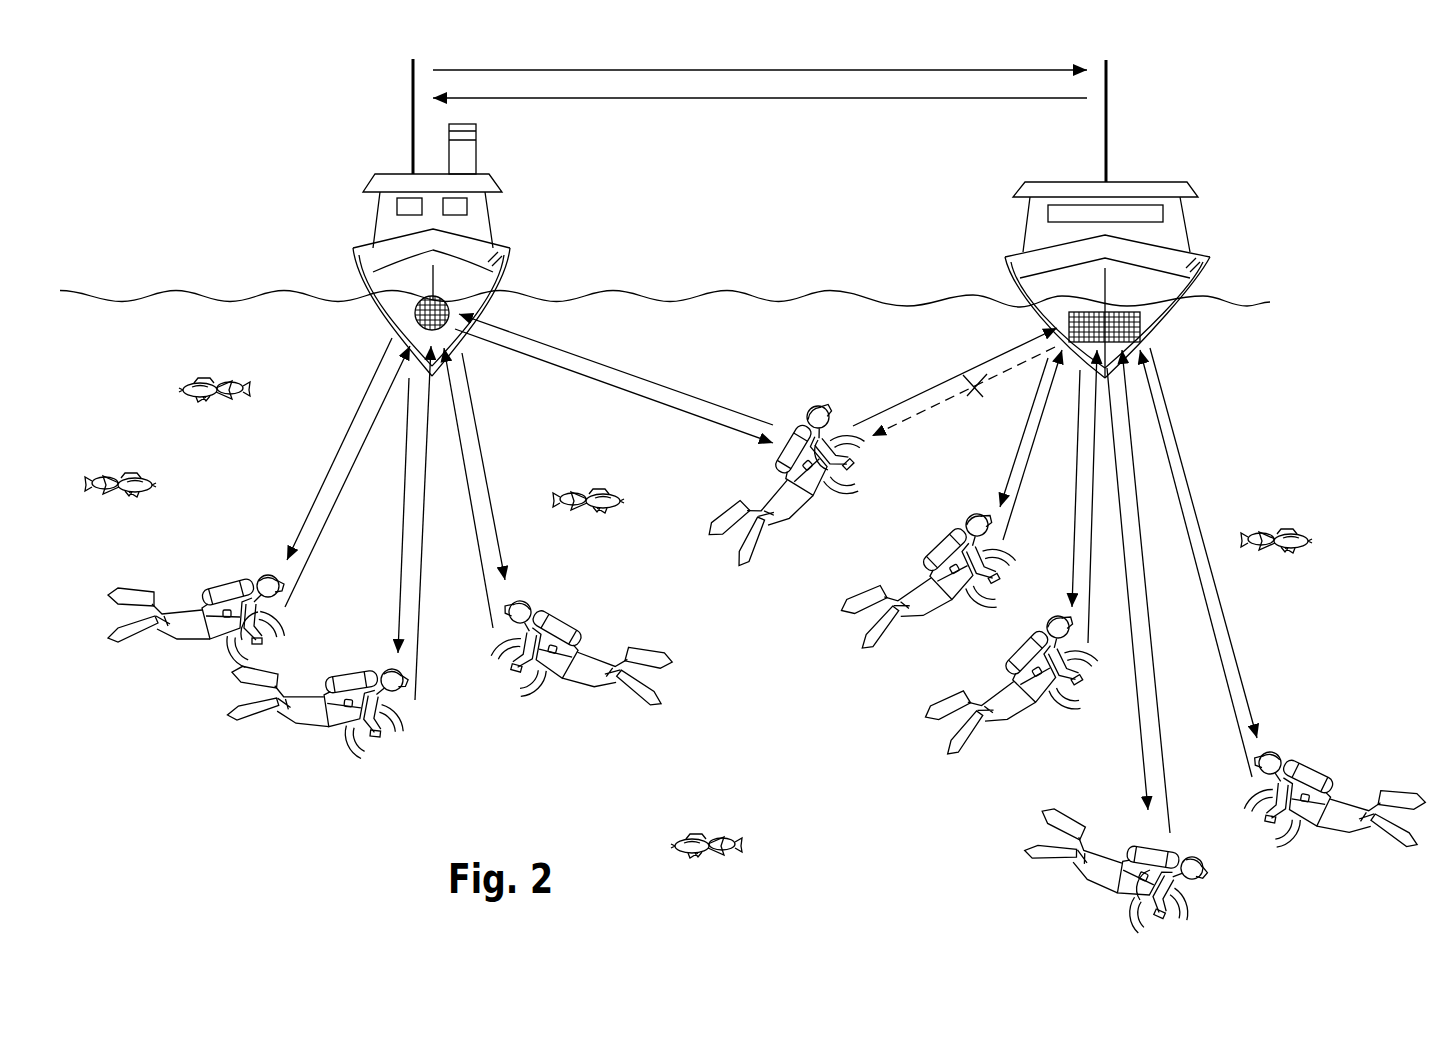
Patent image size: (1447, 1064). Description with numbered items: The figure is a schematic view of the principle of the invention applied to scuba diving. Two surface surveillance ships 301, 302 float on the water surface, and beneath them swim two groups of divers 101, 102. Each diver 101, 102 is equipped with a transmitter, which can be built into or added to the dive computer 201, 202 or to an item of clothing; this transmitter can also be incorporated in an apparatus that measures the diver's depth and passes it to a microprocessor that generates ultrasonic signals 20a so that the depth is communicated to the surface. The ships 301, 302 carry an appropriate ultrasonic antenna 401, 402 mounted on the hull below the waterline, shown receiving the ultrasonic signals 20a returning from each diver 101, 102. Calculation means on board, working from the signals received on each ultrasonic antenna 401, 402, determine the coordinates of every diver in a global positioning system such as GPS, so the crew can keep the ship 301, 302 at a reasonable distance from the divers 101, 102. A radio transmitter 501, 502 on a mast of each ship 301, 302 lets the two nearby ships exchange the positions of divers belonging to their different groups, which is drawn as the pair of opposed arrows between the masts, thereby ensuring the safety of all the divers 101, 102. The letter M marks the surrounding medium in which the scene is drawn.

The diver 101 is at (232, 580).
The diver 102 is at (990, 698).
The dive computer 201 is at (270, 618).
The dive computer 202 is at (1005, 554).
The ultrasonic signals 20a is at (228, 638).
The ship 301 is at (390, 250).
The ship 302 is at (1172, 260).
The ultrasonic antenna 401 is at (416, 314).
The ultrasonic antenna 402 is at (1132, 325).
The radio transmitter 501 is at (412, 91).
The radio transmitter 502 is at (1108, 115).
The sea water medium M is at (126, 406).